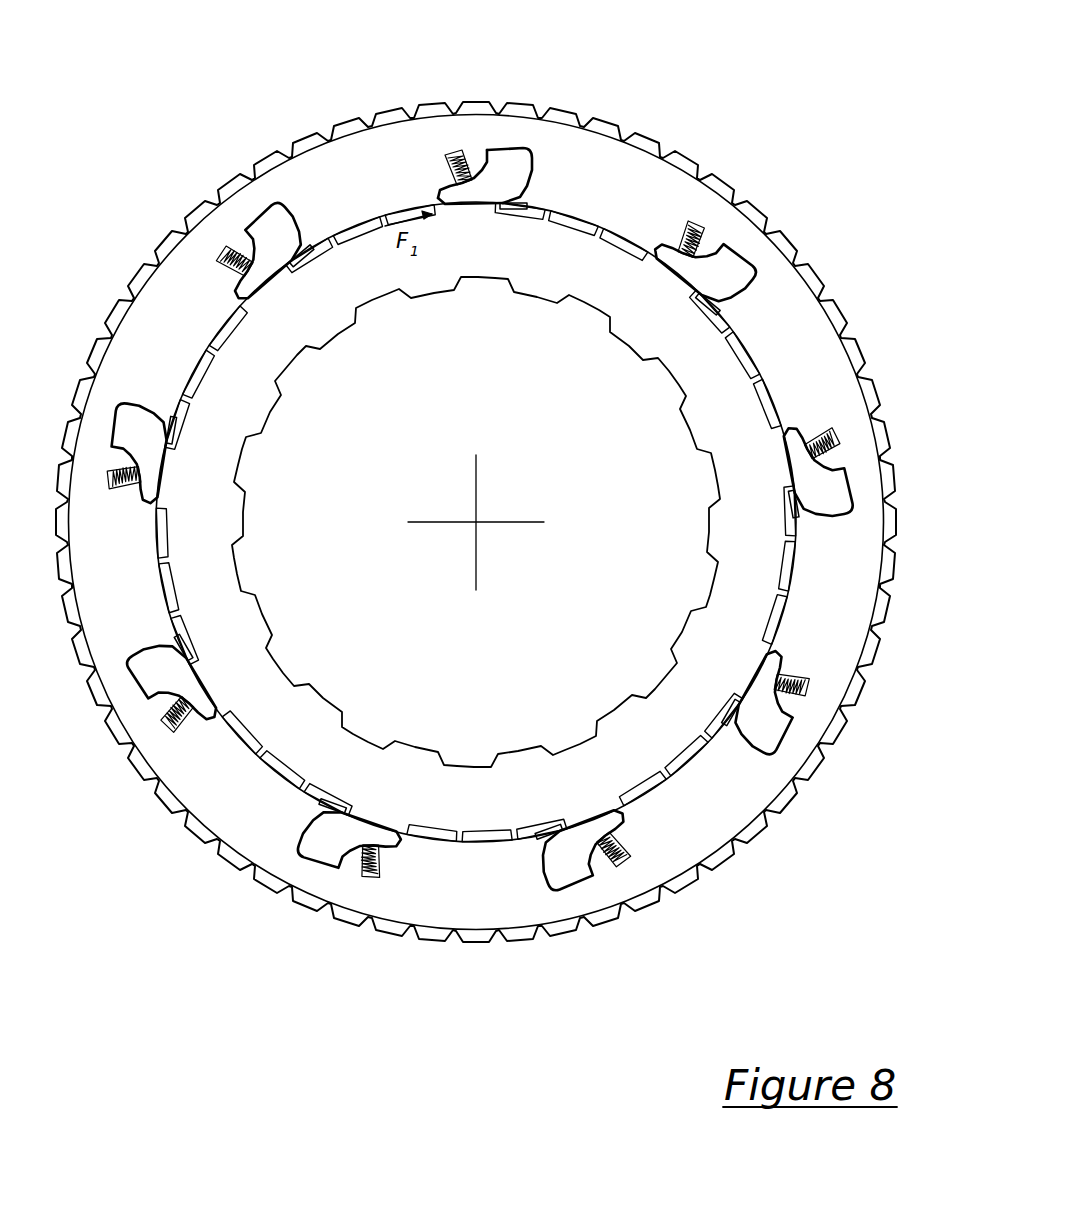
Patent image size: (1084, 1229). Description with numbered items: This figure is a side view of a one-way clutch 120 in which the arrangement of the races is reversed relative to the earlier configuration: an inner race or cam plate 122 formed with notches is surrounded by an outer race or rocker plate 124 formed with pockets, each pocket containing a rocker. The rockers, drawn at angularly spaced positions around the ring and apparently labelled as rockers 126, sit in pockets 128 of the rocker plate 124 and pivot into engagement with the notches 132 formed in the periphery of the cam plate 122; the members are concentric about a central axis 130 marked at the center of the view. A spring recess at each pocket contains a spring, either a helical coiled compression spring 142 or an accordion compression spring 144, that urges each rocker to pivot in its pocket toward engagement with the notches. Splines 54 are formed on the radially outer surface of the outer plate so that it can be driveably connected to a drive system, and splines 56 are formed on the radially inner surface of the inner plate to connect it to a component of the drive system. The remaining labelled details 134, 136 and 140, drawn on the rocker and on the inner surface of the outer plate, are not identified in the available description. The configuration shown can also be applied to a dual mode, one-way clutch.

The one-way clutch assembly 120 is at (283, 90).
The inner race or cam plate 122 is at (635, 338).
The outer race or rocker plate 124 is at (640, 155).
The pawls 126 is at (270, 215).
The pawl head 128 is at (518, 157).
The rotational axis 130 is at (475, 523).
The cam surfaces 132 is at (777, 397).
The pawl engagement face 134 is at (515, 157).
The ramps / wedges 136 is at (470, 232).
The pawl pivot neck 140 is at (462, 150).
The helical coiled compression spring 142 is at (444, 178).
The accordion compression spring 144 is at (458, 167).
The splines 54 is at (870, 380).
The splines 56 is at (688, 628).